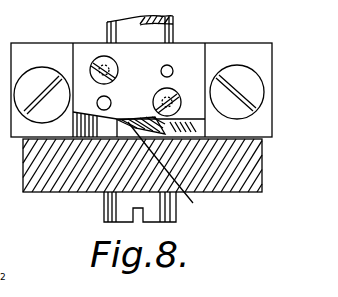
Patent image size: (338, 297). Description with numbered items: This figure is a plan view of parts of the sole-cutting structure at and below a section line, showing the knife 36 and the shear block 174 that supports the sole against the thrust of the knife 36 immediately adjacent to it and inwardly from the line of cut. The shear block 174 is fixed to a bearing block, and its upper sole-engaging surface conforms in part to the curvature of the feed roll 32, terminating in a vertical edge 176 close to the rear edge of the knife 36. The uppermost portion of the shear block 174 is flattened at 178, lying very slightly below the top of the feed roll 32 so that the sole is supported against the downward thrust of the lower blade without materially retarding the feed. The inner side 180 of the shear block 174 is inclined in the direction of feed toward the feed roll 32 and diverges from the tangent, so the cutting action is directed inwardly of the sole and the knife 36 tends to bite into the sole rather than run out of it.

The feed roll 32 is at (228, 182).
The knife 36 is at (161, 126).
The shear block 174 is at (90, 133).
The vertical edge 176 is at (212, 138).
The flattened portion 178 is at (175, 171).
The inner side 180 is at (125, 119).